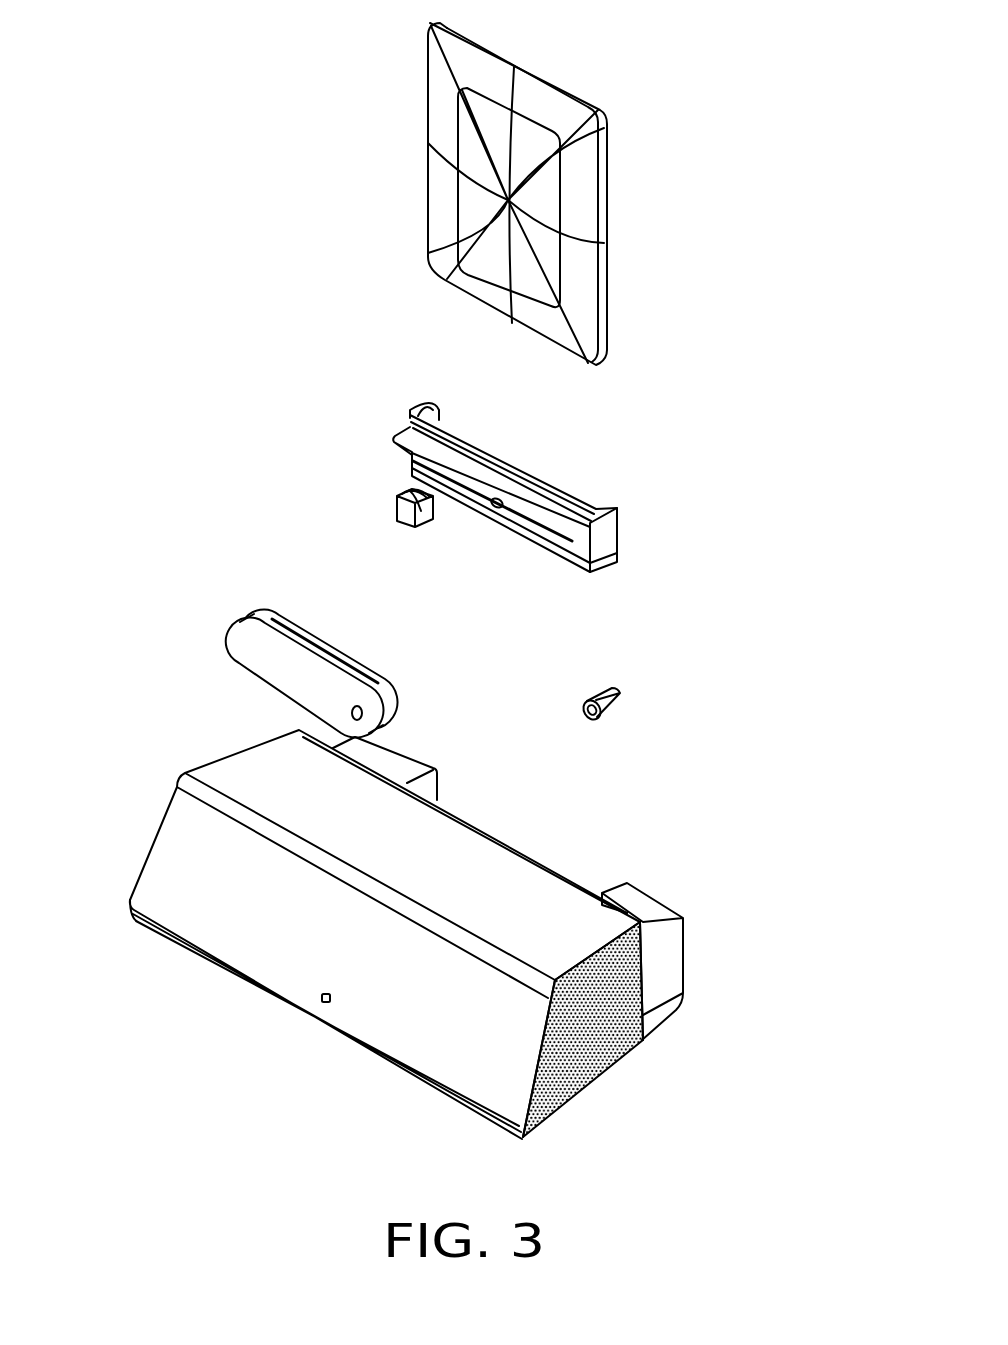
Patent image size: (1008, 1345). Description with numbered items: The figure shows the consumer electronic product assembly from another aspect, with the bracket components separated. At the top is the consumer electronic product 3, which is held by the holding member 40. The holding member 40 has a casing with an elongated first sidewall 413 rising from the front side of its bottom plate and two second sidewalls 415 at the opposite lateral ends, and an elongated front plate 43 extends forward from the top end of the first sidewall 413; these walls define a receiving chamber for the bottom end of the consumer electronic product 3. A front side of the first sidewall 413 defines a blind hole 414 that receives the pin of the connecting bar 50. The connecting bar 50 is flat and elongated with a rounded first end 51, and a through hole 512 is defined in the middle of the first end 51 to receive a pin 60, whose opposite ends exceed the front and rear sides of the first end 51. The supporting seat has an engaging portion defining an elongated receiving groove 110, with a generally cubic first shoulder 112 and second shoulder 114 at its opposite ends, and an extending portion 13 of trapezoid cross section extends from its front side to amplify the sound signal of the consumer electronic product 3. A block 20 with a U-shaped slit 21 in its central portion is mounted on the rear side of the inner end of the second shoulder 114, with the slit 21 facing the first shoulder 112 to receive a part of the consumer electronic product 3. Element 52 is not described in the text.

The consumer electronic product 3 is at (552, 97).
The block 20 is at (370, 480).
The U-shaped slit 21 is at (408, 492).
The holding member 40 is at (590, 508).
The front plate 43 is at (553, 520).
The first sidewall 413 is at (465, 485).
The blind hole 414 is at (500, 508).
The second sidewalls 415 is at (608, 542).
The connecting bar 50 is at (287, 654).
The first end 51 is at (372, 713).
The hinge arm 52 is at (243, 643).
The through hole 512 is at (355, 700).
The pin 60 is at (616, 692).
The receiving groove 110 is at (462, 951).
The first shoulder 112 is at (657, 915).
The second shoulder 114 is at (400, 770).
The extending portion 13 is at (455, 1055).